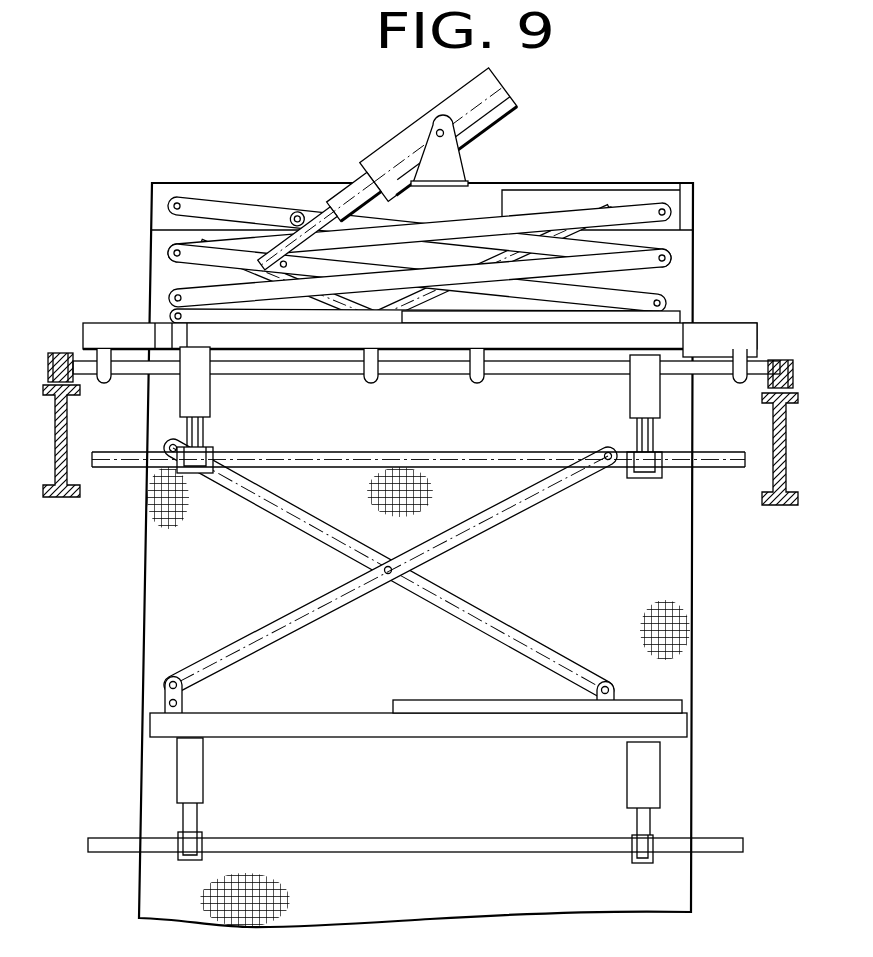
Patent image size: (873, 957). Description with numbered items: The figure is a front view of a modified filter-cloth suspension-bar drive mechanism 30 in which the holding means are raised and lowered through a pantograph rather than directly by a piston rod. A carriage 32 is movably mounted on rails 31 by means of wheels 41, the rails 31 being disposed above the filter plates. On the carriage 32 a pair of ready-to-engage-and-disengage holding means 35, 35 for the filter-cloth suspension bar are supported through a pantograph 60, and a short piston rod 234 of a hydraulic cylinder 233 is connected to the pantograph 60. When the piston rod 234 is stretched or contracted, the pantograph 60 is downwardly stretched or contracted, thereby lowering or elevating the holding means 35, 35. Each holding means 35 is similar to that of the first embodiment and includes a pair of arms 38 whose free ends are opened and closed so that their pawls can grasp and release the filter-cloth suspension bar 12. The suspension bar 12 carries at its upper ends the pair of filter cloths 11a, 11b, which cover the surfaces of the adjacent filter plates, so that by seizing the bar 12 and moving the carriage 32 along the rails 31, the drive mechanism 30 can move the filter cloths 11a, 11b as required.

The filter-cloth suspension-bar drive mechanism 30 is at (662, 109).
The hydraulic cylinder 233 is at (383, 150).
The short piston rod 234 is at (350, 180).
The pantograph 60 is at (188, 268).
The carriage 32 is at (712, 330).
The wheel 41 is at (65, 353).
The rail 31 is at (68, 462).
The filter-cloth suspension-bar holding means 35 is at (190, 392).
The arm 38 is at (200, 474).
The filter-cloth suspension bar 12 is at (364, 462).
The filter cloth 11b is at (693, 592).
The filter cloth 11a is at (742, 644).